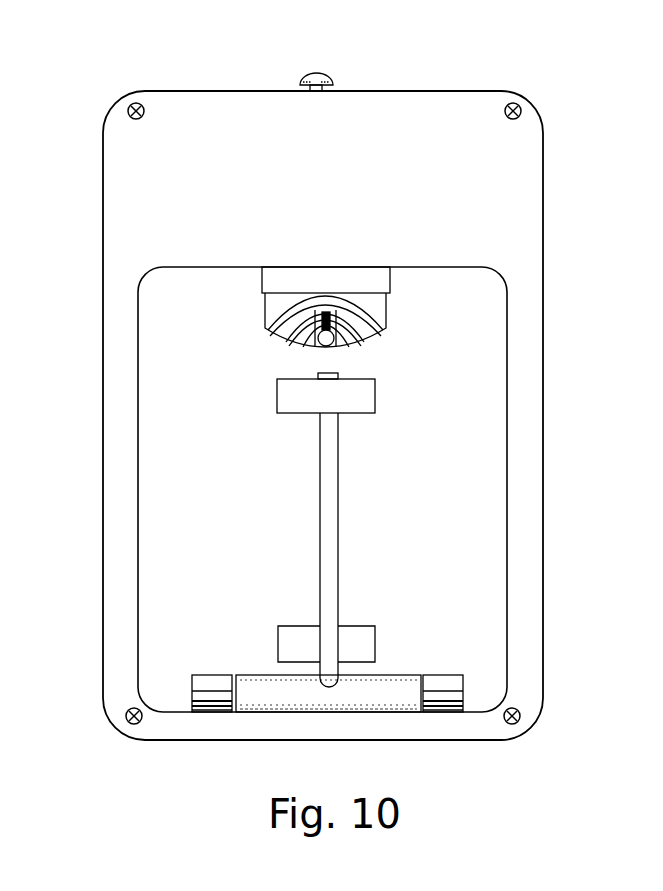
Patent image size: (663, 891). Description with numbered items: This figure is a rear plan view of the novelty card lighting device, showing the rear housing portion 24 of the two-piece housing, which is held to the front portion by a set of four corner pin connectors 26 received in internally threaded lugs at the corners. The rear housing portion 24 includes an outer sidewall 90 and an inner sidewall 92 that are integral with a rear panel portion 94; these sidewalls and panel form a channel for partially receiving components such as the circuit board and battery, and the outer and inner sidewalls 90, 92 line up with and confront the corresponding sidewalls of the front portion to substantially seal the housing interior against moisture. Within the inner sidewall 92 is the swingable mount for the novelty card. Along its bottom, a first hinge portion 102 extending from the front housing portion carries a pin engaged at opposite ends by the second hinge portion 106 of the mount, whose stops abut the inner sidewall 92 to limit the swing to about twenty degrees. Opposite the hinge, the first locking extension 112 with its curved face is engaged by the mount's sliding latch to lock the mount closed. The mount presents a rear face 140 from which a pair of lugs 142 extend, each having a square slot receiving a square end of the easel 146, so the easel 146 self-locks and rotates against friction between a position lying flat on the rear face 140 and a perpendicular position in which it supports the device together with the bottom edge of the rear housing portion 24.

The rear housing portion 24 is at (247, 178).
The corner pin connectors 26 is at (147, 103).
The outer sidewall 90 is at (102, 492).
The inner sidewall 92 is at (139, 475).
The rear panel portion 94 is at (443, 238).
The first hinge portion 102 is at (396, 693).
The second hinge portion 106 is at (208, 692).
The first locking extension 112 is at (285, 281).
The rear face 140 is at (448, 462).
The lugs 142 is at (308, 398).
The easel 146 is at (325, 502).